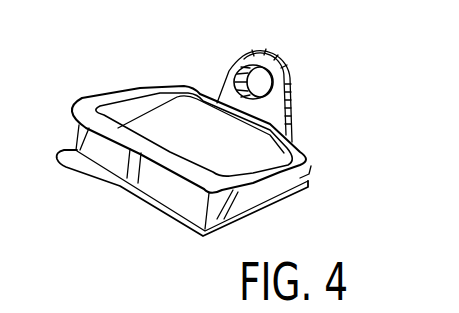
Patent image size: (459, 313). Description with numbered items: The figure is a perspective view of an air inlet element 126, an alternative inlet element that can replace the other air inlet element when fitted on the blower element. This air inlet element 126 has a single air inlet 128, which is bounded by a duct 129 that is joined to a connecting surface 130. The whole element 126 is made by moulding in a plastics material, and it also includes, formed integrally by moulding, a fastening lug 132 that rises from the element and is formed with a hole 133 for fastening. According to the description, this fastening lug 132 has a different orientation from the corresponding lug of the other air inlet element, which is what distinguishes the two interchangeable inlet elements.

The air inlet element 126 is at (103, 70).
The air inlet 128 is at (177, 112).
The duct 129 is at (172, 194).
The connecting surface 130 is at (101, 176).
The fastening lug 132 is at (283, 62).
The hole 133 is at (230, 71).